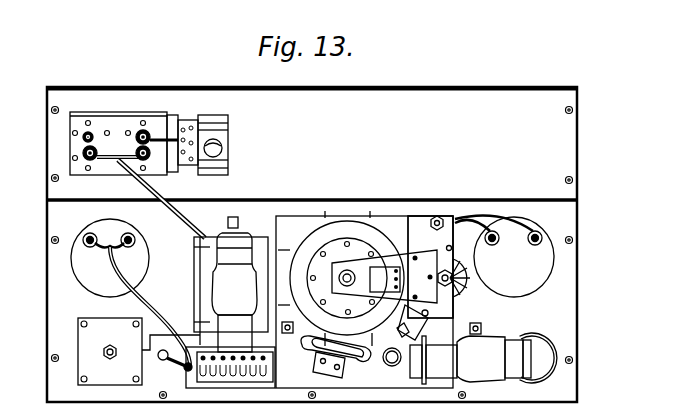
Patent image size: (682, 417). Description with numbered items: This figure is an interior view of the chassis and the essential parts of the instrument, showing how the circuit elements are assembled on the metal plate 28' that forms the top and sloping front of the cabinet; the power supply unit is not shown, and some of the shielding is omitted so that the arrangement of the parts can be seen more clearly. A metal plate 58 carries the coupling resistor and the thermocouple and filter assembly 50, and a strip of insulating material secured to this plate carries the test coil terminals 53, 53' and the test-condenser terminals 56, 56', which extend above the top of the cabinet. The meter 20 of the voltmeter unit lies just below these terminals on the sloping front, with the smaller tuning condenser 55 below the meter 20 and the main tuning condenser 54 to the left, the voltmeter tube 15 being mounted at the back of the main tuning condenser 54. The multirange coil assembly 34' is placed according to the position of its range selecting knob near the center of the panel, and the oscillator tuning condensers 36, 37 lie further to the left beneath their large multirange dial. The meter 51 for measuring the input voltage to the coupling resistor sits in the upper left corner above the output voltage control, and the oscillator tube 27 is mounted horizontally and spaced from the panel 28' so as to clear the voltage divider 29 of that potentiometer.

The metal plate 28' is at (312, 232).
The test-condenser terminal 56 is at (49, 132).
The test-condenser terminal 56' is at (105, 192).
The test coil terminal 53 is at (158, 118).
The test coil terminal 53' is at (167, 172).
The metal plate 58 is at (172, 120).
The thermocouple and filter assembly 50 is at (222, 150).
The meter 20 is at (75, 262).
The smaller tuning condenser 55 is at (94, 322).
The voltmeter tube 15 is at (214, 279).
The main tuning condenser 54 is at (207, 292).
The coil assembly 34' is at (347, 256).
The oscillator tuning condenser 36 is at (427, 220).
The oscillator tuning condenser 37 is at (427, 220).
The meter 51 is at (543, 265).
The oscillator tube 27 is at (495, 345).
The voltage divider 29 is at (545, 353).